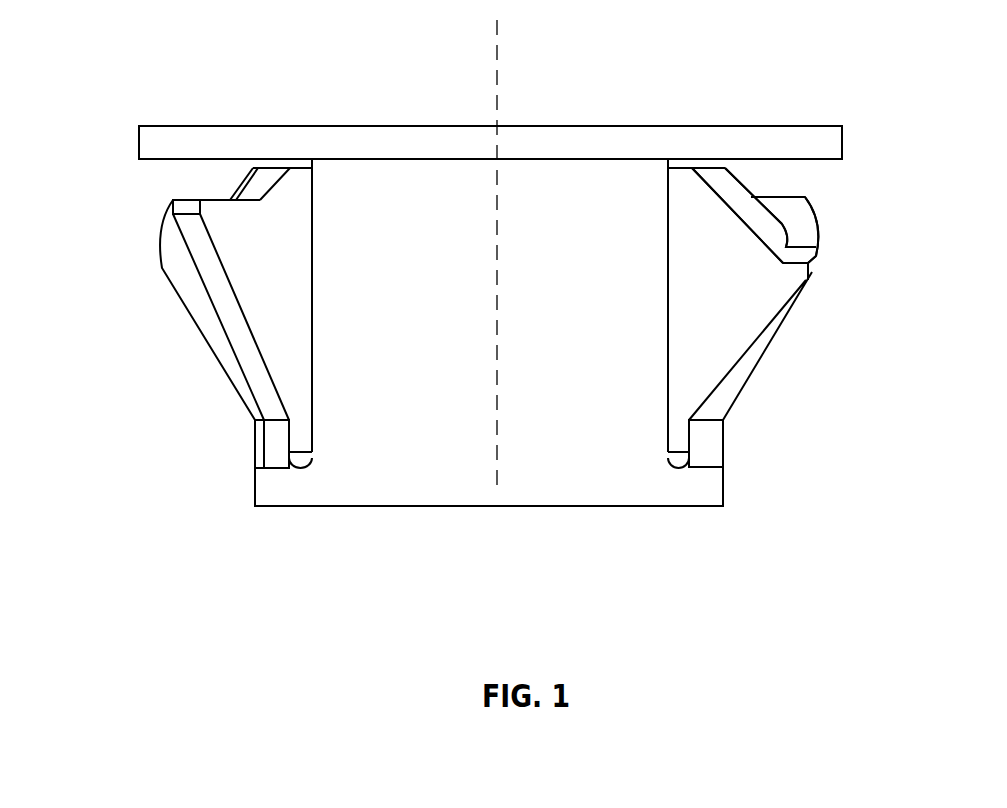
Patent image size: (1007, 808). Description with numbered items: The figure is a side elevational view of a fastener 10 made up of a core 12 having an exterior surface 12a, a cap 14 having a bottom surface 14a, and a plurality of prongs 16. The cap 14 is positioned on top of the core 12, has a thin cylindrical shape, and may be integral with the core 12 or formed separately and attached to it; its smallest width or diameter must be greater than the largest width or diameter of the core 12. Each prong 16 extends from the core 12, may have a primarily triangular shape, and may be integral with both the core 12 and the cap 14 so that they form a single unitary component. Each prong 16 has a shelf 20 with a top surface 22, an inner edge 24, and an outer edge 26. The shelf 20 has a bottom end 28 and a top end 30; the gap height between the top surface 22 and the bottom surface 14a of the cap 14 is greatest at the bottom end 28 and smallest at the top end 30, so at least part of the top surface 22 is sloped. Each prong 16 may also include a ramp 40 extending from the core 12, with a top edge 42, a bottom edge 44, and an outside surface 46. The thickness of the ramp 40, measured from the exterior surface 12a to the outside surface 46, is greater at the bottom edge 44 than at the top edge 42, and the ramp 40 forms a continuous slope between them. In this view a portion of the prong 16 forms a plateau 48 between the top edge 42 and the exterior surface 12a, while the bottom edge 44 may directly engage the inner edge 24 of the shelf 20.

The fastener 10 is at (120, 72).
The core 12 is at (580, 433).
The exterior surface 12a is at (255, 485).
The cap 14 is at (158, 146).
The bottom surface 14a is at (178, 160).
The prong 16 is at (270, 258).
The shelf 20 is at (792, 277).
The top surface 22 is at (796, 222).
The inner edge 24 is at (820, 252).
The outer edge 26 is at (823, 240).
The bottom end 28 is at (811, 266).
The top end 30 is at (778, 198).
The ramp 40 is at (702, 228).
The top edge 42 is at (740, 205).
The bottom edge 44 is at (782, 220).
The outside surface 46 is at (737, 212).
The plateau 48 is at (300, 175).